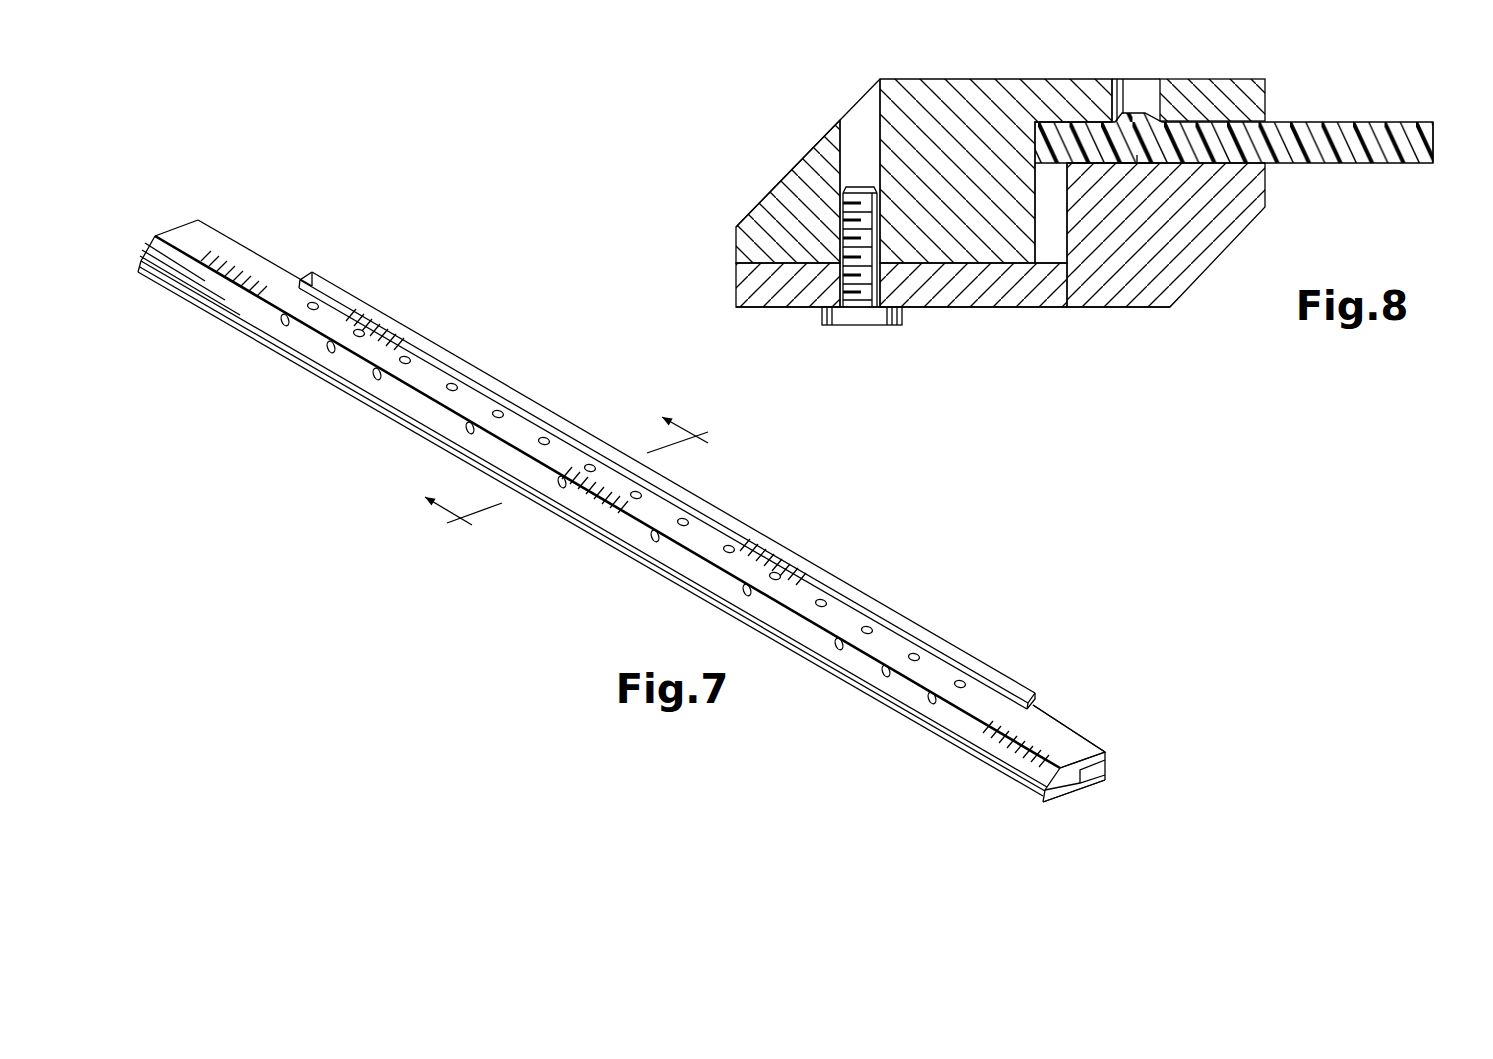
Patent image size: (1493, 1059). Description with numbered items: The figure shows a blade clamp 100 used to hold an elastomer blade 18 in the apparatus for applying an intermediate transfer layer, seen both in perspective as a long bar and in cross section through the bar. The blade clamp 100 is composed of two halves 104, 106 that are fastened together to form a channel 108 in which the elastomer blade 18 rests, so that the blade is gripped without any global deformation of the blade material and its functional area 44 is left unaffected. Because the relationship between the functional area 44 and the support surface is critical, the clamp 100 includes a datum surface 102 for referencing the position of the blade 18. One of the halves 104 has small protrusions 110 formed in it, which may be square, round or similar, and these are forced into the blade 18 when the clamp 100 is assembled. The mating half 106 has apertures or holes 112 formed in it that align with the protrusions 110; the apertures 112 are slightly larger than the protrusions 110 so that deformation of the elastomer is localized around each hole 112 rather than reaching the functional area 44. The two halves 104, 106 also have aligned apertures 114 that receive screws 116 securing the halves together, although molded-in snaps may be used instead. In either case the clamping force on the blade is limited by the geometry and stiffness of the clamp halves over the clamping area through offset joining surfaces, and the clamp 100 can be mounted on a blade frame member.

In FIG. 7, the elastomer blade 18 is at (1014, 681).
In FIG. 8, the elastomer blade 18 is at (1342, 121).
In FIG. 8, the functional area 44 is at (1433, 165).
In FIG. 7, the blade clamp 100 is at (1132, 768).
In FIG. 8, the blade clamp 100 is at (758, 161).
In FIG. 8, the datum surface 102 is at (1038, 213).
In FIG. 7, the clamp half 104 is at (1086, 790).
In FIG. 8, the clamp half 104 is at (1113, 308).
In FIG. 7, the mating clamp half 106 is at (1082, 735).
In FIG. 8, the mating clamp half 106 is at (1002, 78).
In FIG. 8, the channel 108 is at (1214, 112).
In FIG. 8, the protrusions 110 is at (1137, 163).
In FIG. 7, the apertures 112 is at (414, 356).
In FIG. 8, the apertures 112 is at (1156, 92).
In FIG. 7, the aligned apertures 114 is at (283, 320).
In FIG. 8, the aligned apertures 114 is at (853, 132).
In FIG. 8, the screws 116 is at (877, 328).